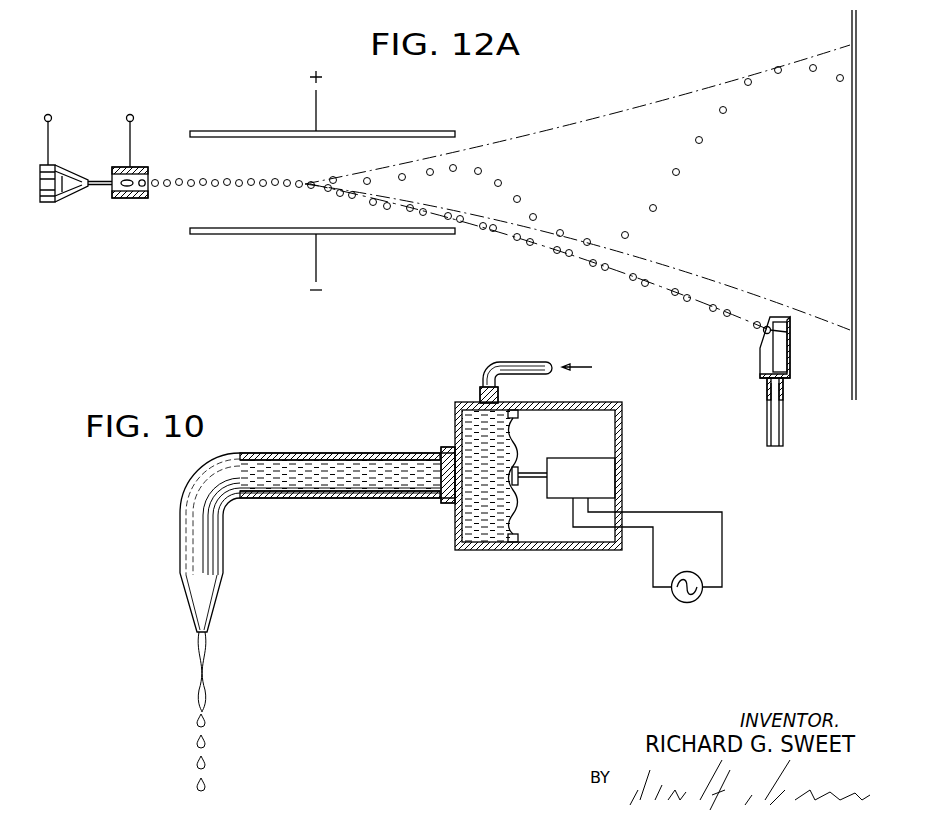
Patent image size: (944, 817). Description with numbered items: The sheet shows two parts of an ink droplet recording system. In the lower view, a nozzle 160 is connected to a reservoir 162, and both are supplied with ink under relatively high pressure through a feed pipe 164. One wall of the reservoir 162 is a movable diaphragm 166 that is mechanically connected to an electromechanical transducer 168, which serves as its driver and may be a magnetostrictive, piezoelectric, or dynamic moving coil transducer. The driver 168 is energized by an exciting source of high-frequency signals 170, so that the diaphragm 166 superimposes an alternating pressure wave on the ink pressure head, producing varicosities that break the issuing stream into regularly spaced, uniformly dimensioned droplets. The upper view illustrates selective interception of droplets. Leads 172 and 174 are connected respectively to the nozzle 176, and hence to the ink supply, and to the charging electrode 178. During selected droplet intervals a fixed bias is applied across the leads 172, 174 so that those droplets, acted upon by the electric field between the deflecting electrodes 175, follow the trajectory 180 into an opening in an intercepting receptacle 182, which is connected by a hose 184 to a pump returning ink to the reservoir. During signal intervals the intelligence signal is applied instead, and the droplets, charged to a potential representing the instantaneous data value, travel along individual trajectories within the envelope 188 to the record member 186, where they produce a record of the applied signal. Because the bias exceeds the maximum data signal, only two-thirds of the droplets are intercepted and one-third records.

In FIG. 10, the nozzle 160 is at (341, 463).
In FIG. 10, the reservoir 162 is at (489, 550).
In FIG. 10, the feed pipe 164 is at (506, 366).
In FIG. 10, the diaphragm 166 is at (520, 446).
In FIG. 10, the electromechanical transducer 168 is at (597, 458).
In FIG. 10, the exciting source of high-frequency signals 170 is at (687, 603).
In FIG. 12A, the lead 172 is at (52, 148).
In FIG. 12A, the lead 174 is at (133, 140).
In FIG. 12A, the deflecting electrodes 175 is at (275, 131).
In FIG. 12A, the nozzle 176 is at (48, 203).
In FIG. 12A, the charging electrode 178 is at (130, 203).
In FIG. 12A, the trajectory 180 is at (505, 233).
In FIG. 12A, the intercepting receptacle 182 is at (760, 356).
In FIG. 12A, the hose 184 is at (777, 428).
In FIG. 12A, the record member 186 is at (852, 186).
In FIG. 12A, the envelope 188 is at (585, 130).